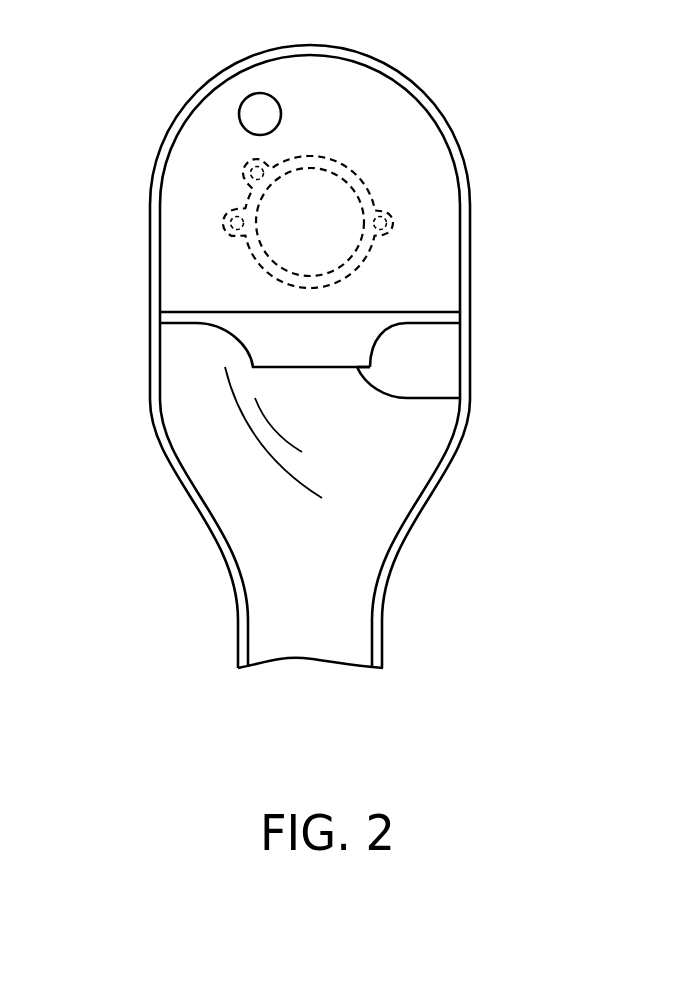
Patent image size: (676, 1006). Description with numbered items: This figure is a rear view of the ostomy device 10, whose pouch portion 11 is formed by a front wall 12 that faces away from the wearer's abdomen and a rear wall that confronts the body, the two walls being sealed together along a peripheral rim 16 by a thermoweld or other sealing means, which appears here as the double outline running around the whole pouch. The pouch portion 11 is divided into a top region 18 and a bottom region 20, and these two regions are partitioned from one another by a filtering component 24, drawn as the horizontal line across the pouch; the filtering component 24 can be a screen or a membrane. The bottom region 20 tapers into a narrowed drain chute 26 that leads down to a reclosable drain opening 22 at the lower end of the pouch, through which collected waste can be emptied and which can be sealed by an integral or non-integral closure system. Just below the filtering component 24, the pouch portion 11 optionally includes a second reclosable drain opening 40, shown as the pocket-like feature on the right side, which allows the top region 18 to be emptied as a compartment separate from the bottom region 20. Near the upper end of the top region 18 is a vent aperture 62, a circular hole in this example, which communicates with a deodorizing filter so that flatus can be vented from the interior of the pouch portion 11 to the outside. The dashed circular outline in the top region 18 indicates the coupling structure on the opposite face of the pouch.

The ostomy device 10 is at (115, 140).
The pouch portion 11 is at (437, 360).
The front wall 12 is at (428, 262).
The rim 16 is at (457, 170).
The top region 18 is at (380, 138).
The bottom region 20 is at (245, 475).
The reclosable drain opening 22 is at (293, 661).
The filtering component 24 is at (430, 311).
The narrowed drain chute 26 is at (348, 570).
The second reclosable drain opening 40 is at (400, 398).
The vent aperture 62 is at (244, 102).